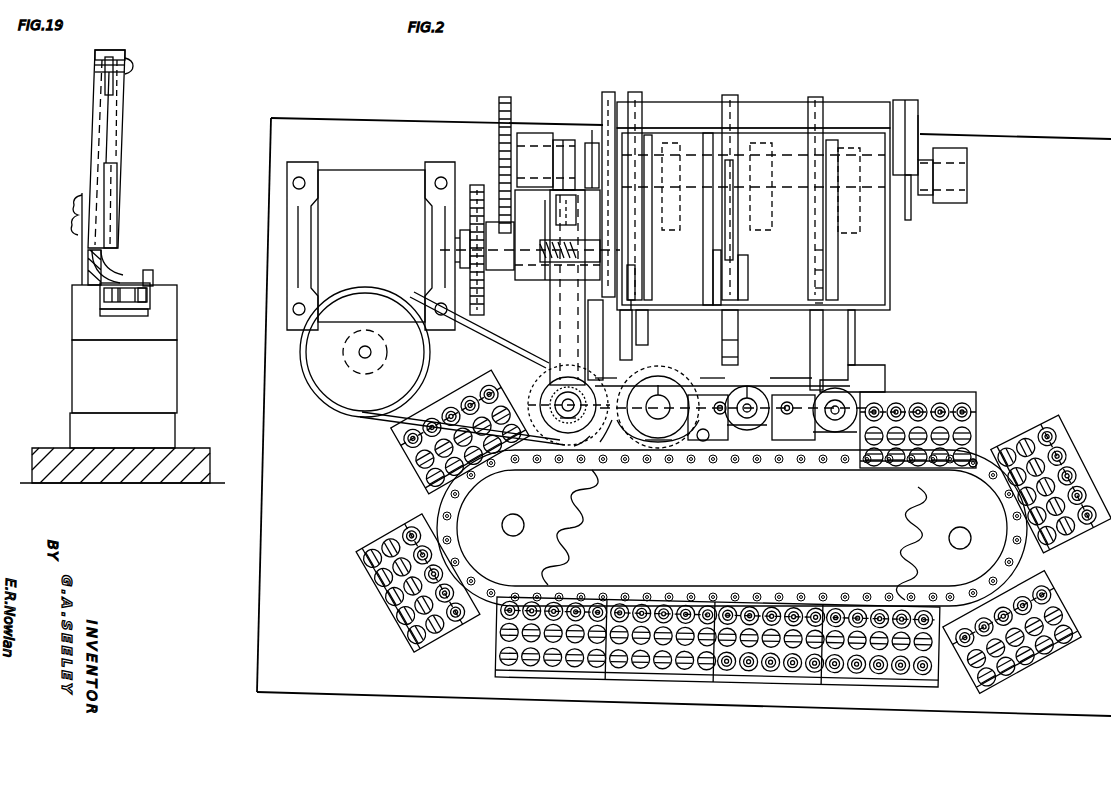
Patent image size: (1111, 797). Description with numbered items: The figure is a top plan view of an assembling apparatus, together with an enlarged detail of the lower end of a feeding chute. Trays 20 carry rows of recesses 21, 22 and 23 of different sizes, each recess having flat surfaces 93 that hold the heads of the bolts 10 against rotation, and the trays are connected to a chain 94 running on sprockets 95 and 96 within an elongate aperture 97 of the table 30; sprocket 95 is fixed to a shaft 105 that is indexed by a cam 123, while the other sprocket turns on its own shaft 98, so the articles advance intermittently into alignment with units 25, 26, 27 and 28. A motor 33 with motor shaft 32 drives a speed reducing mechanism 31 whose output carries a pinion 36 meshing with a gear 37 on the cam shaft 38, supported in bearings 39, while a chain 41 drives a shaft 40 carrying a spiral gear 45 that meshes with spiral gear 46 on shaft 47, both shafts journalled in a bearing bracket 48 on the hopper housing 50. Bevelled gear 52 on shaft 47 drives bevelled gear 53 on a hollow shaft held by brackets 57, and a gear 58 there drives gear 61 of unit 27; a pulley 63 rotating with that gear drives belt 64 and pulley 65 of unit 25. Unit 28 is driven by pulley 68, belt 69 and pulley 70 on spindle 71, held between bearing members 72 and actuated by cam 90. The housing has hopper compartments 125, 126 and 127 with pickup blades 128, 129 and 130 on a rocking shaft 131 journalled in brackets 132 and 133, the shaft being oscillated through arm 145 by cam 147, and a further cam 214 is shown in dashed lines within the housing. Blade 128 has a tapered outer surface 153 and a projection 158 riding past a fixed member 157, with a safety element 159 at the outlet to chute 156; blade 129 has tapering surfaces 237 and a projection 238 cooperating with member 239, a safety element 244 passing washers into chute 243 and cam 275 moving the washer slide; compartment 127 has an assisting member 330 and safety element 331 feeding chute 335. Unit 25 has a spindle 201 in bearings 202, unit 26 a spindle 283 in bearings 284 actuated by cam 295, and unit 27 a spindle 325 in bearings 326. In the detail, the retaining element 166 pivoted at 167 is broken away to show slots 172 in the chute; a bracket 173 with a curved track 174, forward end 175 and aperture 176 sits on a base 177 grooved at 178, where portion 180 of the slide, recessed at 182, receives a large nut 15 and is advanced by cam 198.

In FIG. 2, the bolt 10 is at (730, 662).
In FIG. 19, the large nut 15 is at (118, 305).
In FIG. 2, the trays 20 is at (428, 478).
In FIG. 2, the recesses 21 is at (502, 658).
In FIG. 2, the recesses 22 is at (500, 636).
In FIG. 2, the recesses 23 is at (500, 614).
In FIG. 2, the unit 25 is at (836, 427).
In FIG. 2, the unit 26 is at (747, 430).
In FIG. 2, the unit 27 is at (675, 448).
In FIG. 2, the unit 28 is at (592, 448).
In FIG. 19, the table 30 is at (165, 480).
In FIG. 2, the table 30 is at (257, 599).
In FIG. 2, the speed reducing mechanism 31 is at (356, 177).
In FIG. 2, the motor shaft 32 is at (360, 352).
In FIG. 2, the motor 33 is at (325, 400).
In FIG. 2, the pinion 36 is at (502, 275).
In FIG. 2, the gear 37 is at (511, 104).
In FIG. 2, the cam shaft 38 is at (559, 140).
In FIG. 2, the bearings 39 is at (542, 132).
In FIG. 2, the shaft 40 is at (522, 240).
In FIG. 2, the chain 41 is at (484, 290).
In FIG. 2, the spiral gear 45 is at (568, 212).
In FIG. 2, the spiral gear 46 is at (540, 252).
In FIG. 2, the shaft 47 is at (548, 270).
In FIG. 2, the bearing bracket 48 is at (545, 202).
In FIG. 2, the hopper housing 50 is at (888, 253).
In FIG. 2, the bevelled gear 52 is at (543, 360).
In FIG. 2, the bevelled gear 53 is at (528, 368).
In FIG. 2, the brackets 57 is at (882, 370).
In FIG. 2, the gear 58 is at (518, 389).
In FIG. 2, the gear 61 is at (680, 372).
In FIG. 2, the pulley 63 is at (678, 444).
In FIG. 2, the belt 64 is at (703, 442).
In FIG. 2, the pulley 65 is at (814, 442).
In FIG. 2, the pulley 68 is at (340, 397).
In FIG. 2, the belt 69 is at (395, 418).
In FIG. 2, the pulley 70 is at (554, 443).
In FIG. 2, the spindle 71 is at (566, 422).
In FIG. 2, the bearing members 72 is at (582, 442).
In FIG. 2, the cam 90 is at (582, 100).
In FIG. 2, the flat surfaces 93 is at (510, 662).
In FIG. 2, the chain 94 is at (1030, 550).
In FIG. 2, the sprocket 95 is at (574, 546).
In FIG. 2, the sprocket 96 is at (895, 562).
In FIG. 2, the elongate aperture 97 is at (970, 450).
In FIG. 2, the sprocket shaft 98 is at (960, 542).
In FIG. 2, the shaft 105 is at (516, 530).
In FIG. 2, the cam 123 is at (592, 106).
In FIG. 2, the hopper compartment 125 is at (870, 281).
In FIG. 2, the hopper compartment 126 is at (745, 310).
In FIG. 2, the hopper compartment 127 is at (678, 306).
In FIG. 2, the pickup blade 128 is at (813, 97).
In FIG. 2, the pickup blade 129 is at (724, 95).
In FIG. 2, the pickup blade 130 is at (634, 93).
In FIG. 2, the rocking shaft 131 is at (666, 102).
In FIG. 2, the bracket 132 is at (608, 92).
In FIG. 2, the bracket 133 is at (896, 100).
In FIG. 2, the arm 145 is at (918, 118).
In FIG. 2, the cam 147 is at (911, 216).
In FIG. 2, the outer surface 153 is at (820, 252).
In FIG. 19, the chute 156 is at (97, 97).
In FIG. 2, the chute 156 is at (823, 336).
In FIG. 2, the fixed member 157 is at (820, 290).
In FIG. 2, the projection 158 is at (820, 272).
In FIG. 2, the safety element 159 is at (820, 305).
In FIG. 19, the retaining element 166 is at (114, 84).
In FIG. 19, the pivot 167 is at (131, 61).
In FIG. 19, the slots 172 is at (110, 185).
In FIG. 19, the bracket 173 is at (81, 258).
In FIG. 19, the track 174 is at (113, 268).
In FIG. 19, the forward end 175 is at (154, 277).
In FIG. 19, the aperture 176 is at (125, 278).
In FIG. 19, the base 177 is at (74, 392).
In FIG. 19, the groove 178 is at (137, 316).
In FIG. 19, the portion 180 is at (100, 293).
In FIG. 19, the recess 182 is at (150, 297).
In FIG. 2, the cam 198 is at (826, 143).
In FIG. 2, the spindle 201 is at (834, 404).
In FIG. 2, the bearings 202 is at (828, 436).
In FIG. 2, the cam 214 is at (856, 202).
In FIG. 2, the tapering surfaces 237 is at (733, 245).
In FIG. 2, the projection 238 is at (702, 263).
In FIG. 2, the member 239 is at (747, 280).
In FIG. 2, the chute 243 is at (738, 357).
In FIG. 2, the safety element 244 is at (741, 339).
In FIG. 2, the cam 275 is at (733, 155).
In FIG. 2, the spindle 283 is at (747, 408).
In FIG. 2, the bearings 284 is at (733, 427).
In FIG. 2, the cam 295 is at (770, 200).
In FIG. 2, the spindle 325 is at (658, 384).
In FIG. 2, the bearings 326 is at (662, 447).
In FIG. 2, the assisting member 330 is at (636, 280).
In FIG. 2, the safety element 331 is at (635, 303).
In FIG. 2, the chute 335 is at (632, 326).